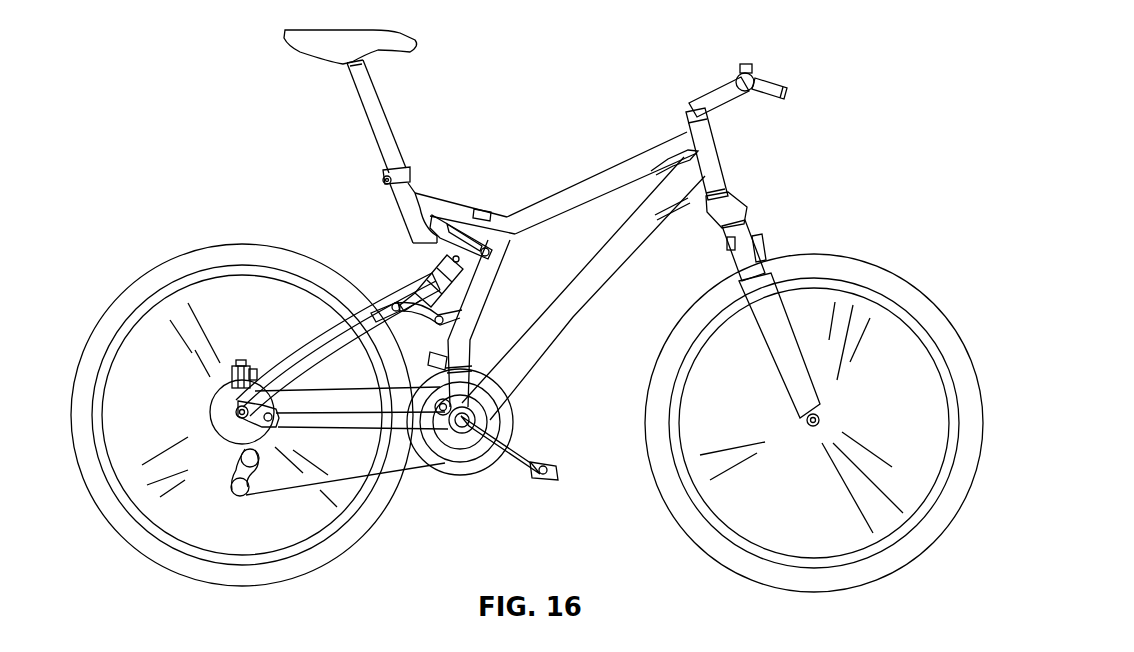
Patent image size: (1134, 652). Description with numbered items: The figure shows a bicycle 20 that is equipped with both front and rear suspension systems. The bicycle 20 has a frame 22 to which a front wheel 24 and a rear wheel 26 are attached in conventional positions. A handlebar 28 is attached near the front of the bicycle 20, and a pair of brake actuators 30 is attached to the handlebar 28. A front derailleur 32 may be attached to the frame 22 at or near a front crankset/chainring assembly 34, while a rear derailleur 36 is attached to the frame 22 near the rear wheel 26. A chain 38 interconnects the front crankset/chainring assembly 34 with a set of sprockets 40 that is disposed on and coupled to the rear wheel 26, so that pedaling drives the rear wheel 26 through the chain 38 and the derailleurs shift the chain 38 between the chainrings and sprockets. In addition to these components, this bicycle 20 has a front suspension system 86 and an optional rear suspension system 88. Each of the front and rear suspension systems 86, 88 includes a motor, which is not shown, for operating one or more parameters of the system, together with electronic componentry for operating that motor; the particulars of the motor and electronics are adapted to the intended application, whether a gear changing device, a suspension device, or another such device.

The bicycle 20 is at (777, 120).
The frame 22 is at (607, 172).
The front wheel 24 is at (947, 346).
The rear wheel 26 is at (223, 246).
The handlebar 28 is at (755, 76).
The brake actuators 30 is at (788, 95).
The front derailleur 32 is at (478, 354).
The front crankset/chainring assembly 34 is at (523, 415).
The rear derailleur 36 is at (228, 450).
The chain 38 is at (418, 468).
The set of sprockets 40 is at (208, 411).
The front suspension system 86 is at (763, 288).
The rear suspension system 88 is at (450, 281).